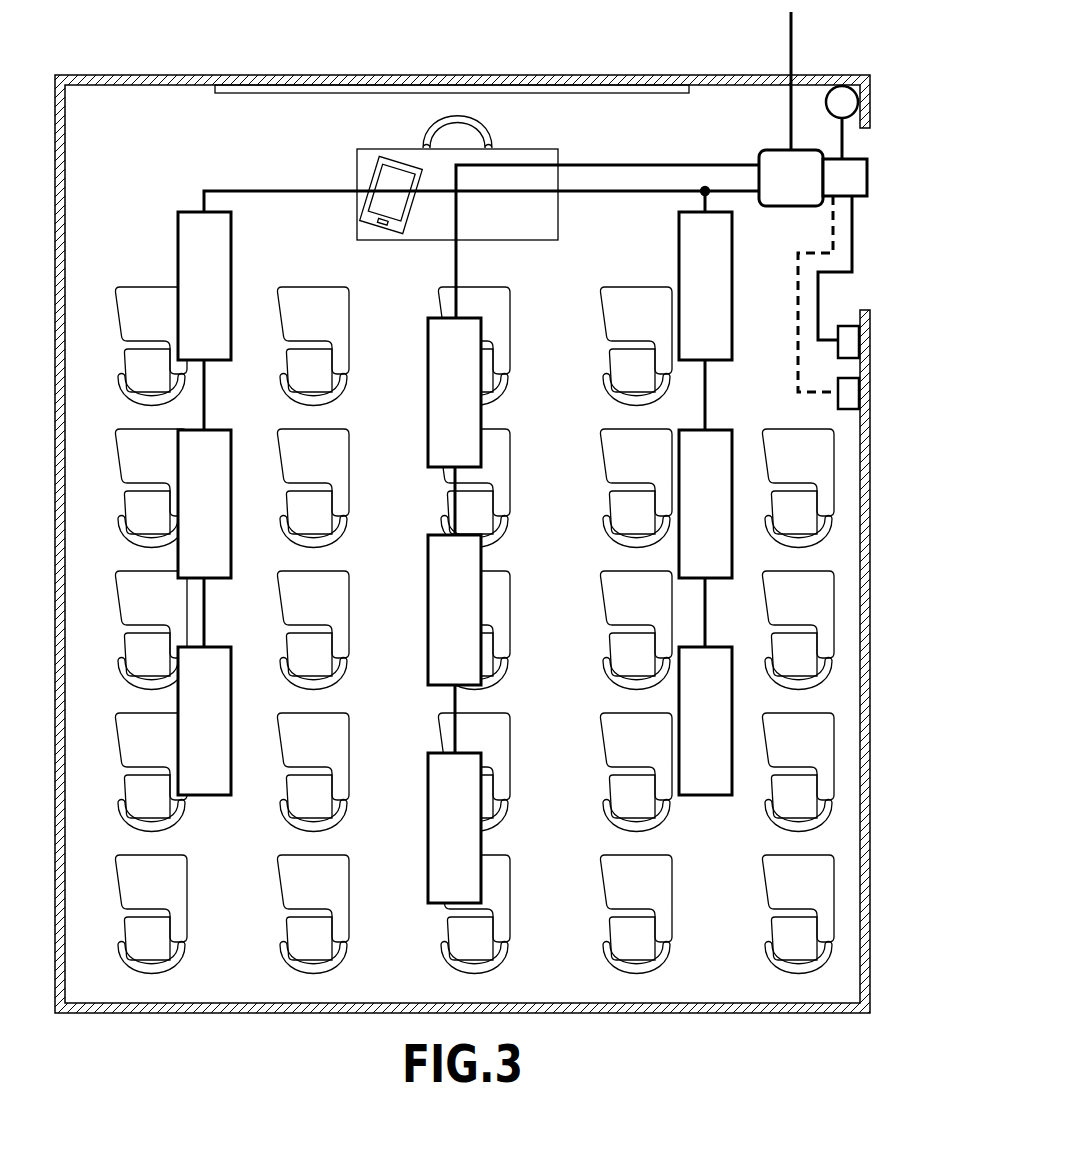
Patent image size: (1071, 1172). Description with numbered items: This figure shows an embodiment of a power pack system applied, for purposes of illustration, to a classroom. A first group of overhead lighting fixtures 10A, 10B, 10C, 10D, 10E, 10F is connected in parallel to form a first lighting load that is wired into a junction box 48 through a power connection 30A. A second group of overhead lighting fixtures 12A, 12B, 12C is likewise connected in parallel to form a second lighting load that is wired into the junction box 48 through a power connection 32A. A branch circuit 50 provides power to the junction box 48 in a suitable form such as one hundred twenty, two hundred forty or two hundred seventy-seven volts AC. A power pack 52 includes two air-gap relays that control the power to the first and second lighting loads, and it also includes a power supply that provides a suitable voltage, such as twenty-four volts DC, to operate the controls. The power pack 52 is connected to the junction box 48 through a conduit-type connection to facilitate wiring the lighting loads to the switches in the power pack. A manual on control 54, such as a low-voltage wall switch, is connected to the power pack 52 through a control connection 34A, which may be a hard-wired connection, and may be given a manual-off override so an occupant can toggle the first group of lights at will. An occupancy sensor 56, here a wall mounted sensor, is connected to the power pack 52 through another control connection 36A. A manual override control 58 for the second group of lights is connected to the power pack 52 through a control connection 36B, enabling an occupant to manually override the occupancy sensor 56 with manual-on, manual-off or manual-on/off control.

The overhead lighting fixture 10A is at (220, 732).
The overhead lighting fixture 10B is at (220, 515).
The overhead lighting fixture 10C is at (220, 297).
The overhead lighting fixture 10D is at (721, 297).
The overhead lighting fixture 10E is at (721, 515).
The overhead lighting fixture 10F is at (721, 732).
The overhead lighting fixture 12A is at (470, 839).
The overhead lighting fixture 12B is at (470, 621).
The overhead lighting fixture 12C is at (470, 404).
The power connection 30A is at (240, 190).
The power connection 32A is at (633, 165).
The control connection 34A is at (854, 232).
The control connection 36A is at (845, 139).
The control connection 36B is at (833, 229).
The junction box 48 is at (806, 194).
The branch circuit 50 is at (790, 30).
The power pack 52 is at (869, 177).
The manual on control 54 is at (861, 340).
The occupancy sensor 56 is at (826, 116).
The manual override control 58 is at (861, 392).